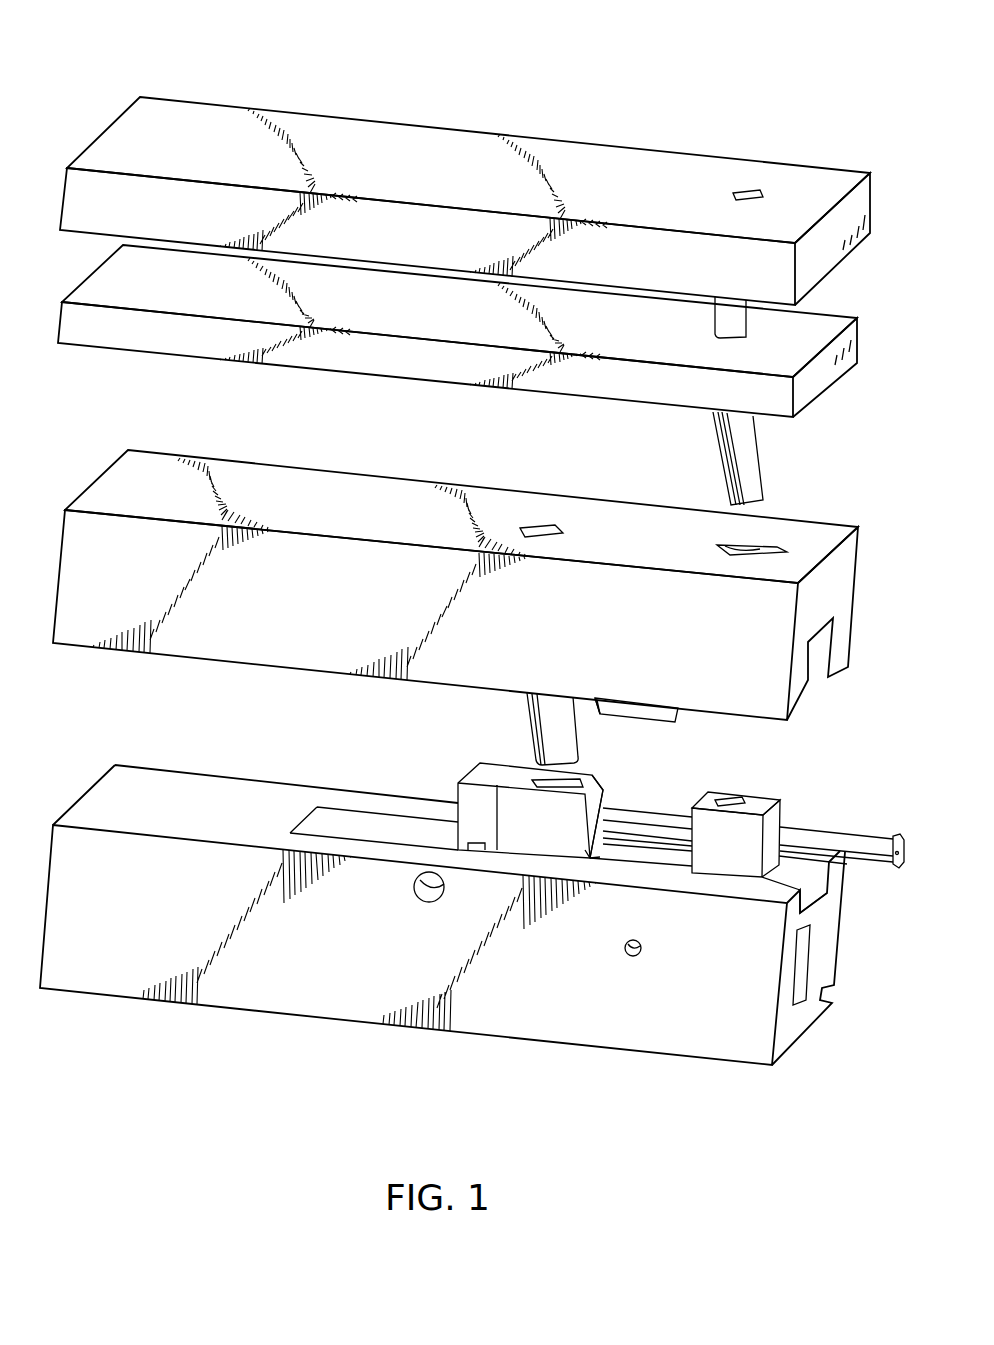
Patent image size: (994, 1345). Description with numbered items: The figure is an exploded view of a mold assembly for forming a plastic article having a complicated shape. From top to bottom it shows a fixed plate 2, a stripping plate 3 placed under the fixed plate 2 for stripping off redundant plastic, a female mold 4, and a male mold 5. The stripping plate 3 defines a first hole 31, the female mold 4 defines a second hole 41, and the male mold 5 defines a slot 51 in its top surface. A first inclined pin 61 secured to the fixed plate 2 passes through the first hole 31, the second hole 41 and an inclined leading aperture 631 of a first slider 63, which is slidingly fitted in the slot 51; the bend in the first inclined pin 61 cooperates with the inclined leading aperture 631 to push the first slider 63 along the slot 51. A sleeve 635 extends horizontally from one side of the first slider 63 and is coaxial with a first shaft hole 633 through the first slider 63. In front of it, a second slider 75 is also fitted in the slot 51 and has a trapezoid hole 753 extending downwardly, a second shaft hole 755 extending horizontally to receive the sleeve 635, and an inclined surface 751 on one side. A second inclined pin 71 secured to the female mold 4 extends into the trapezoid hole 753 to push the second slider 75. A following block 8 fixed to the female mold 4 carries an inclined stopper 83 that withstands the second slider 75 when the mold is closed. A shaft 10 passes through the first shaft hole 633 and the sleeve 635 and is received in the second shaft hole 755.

The fixed plate 2 is at (213, 107).
The stripping plate 3 is at (188, 360).
The first hole 31 is at (713, 327).
The first inclined pin 61 is at (742, 455).
The female mold 4 is at (190, 657).
The second hole 41 is at (725, 545).
The following block 8 is at (643, 712).
The inclined stopper 83 is at (593, 700).
The second inclined pin 71 is at (527, 730).
The second slider 75 is at (515, 832).
The trapezoid hole 753 is at (545, 781).
The inclined surface 751 is at (597, 803).
The second shaft hole 755 is at (612, 863).
The sleeve 635 is at (650, 830).
The first slider 63 is at (762, 803).
The inclined leading aperture 631 is at (722, 798).
The first shaft hole 633 is at (780, 802).
The shaft 10 is at (823, 843).
The slot 51 is at (808, 878).
The male mold 5 is at (220, 1008).